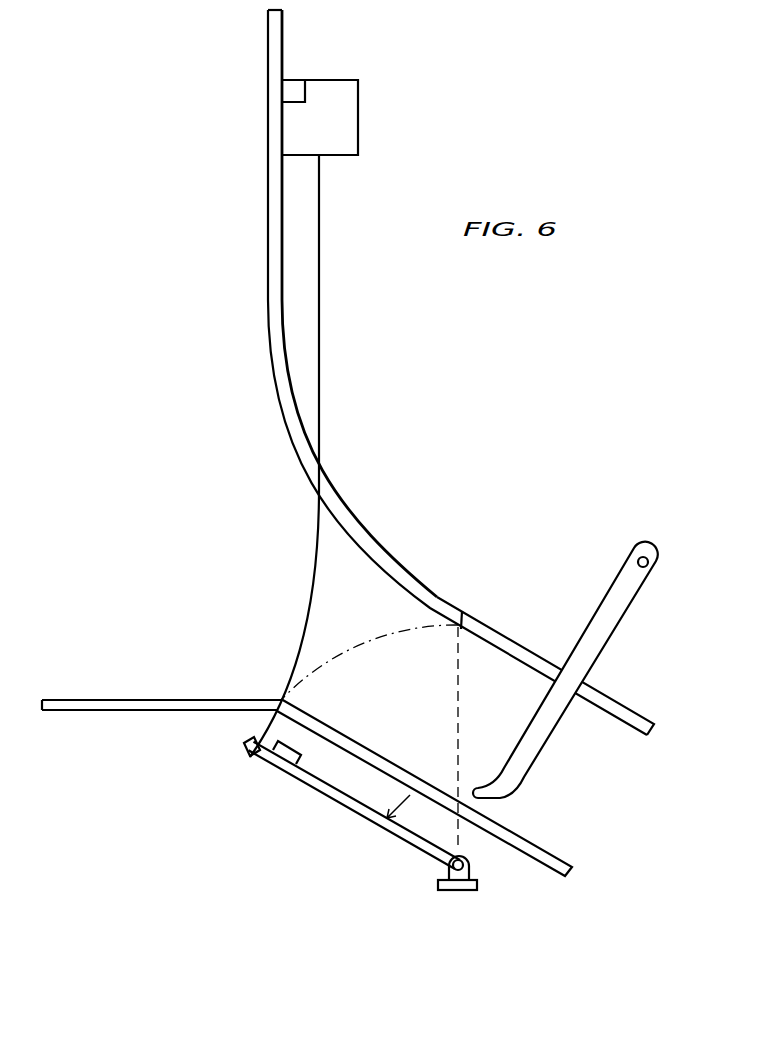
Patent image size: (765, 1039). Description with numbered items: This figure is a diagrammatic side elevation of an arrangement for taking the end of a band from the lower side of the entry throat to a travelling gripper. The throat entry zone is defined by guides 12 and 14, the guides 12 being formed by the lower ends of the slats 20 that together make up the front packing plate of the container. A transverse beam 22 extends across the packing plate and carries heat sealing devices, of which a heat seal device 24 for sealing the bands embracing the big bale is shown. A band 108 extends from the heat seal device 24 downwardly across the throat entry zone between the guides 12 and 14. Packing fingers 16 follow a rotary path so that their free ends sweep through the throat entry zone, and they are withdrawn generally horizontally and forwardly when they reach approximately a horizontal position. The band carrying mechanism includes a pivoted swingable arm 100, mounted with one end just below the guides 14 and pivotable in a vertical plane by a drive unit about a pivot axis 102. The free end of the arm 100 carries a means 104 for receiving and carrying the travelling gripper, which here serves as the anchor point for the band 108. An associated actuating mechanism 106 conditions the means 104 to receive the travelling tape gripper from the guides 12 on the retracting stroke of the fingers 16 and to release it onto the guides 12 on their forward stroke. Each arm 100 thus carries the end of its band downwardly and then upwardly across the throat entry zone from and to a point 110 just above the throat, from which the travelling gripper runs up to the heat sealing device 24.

The guides 12 is at (515, 652).
The guides 14 is at (540, 850).
The packing fingers 16 is at (588, 665).
The slats 20 is at (275, 240).
The transverse beam 22 is at (292, 90).
The heat sealing device 24 is at (358, 106).
The swingable arm 100 is at (460, 713).
The pivot axis 102 is at (447, 861).
The means for receiving and carrying a travelling gripper 104 is at (260, 760).
The actuating mechanism 106 is at (299, 762).
The band 108 is at (320, 337).
The point 110 is at (464, 618).